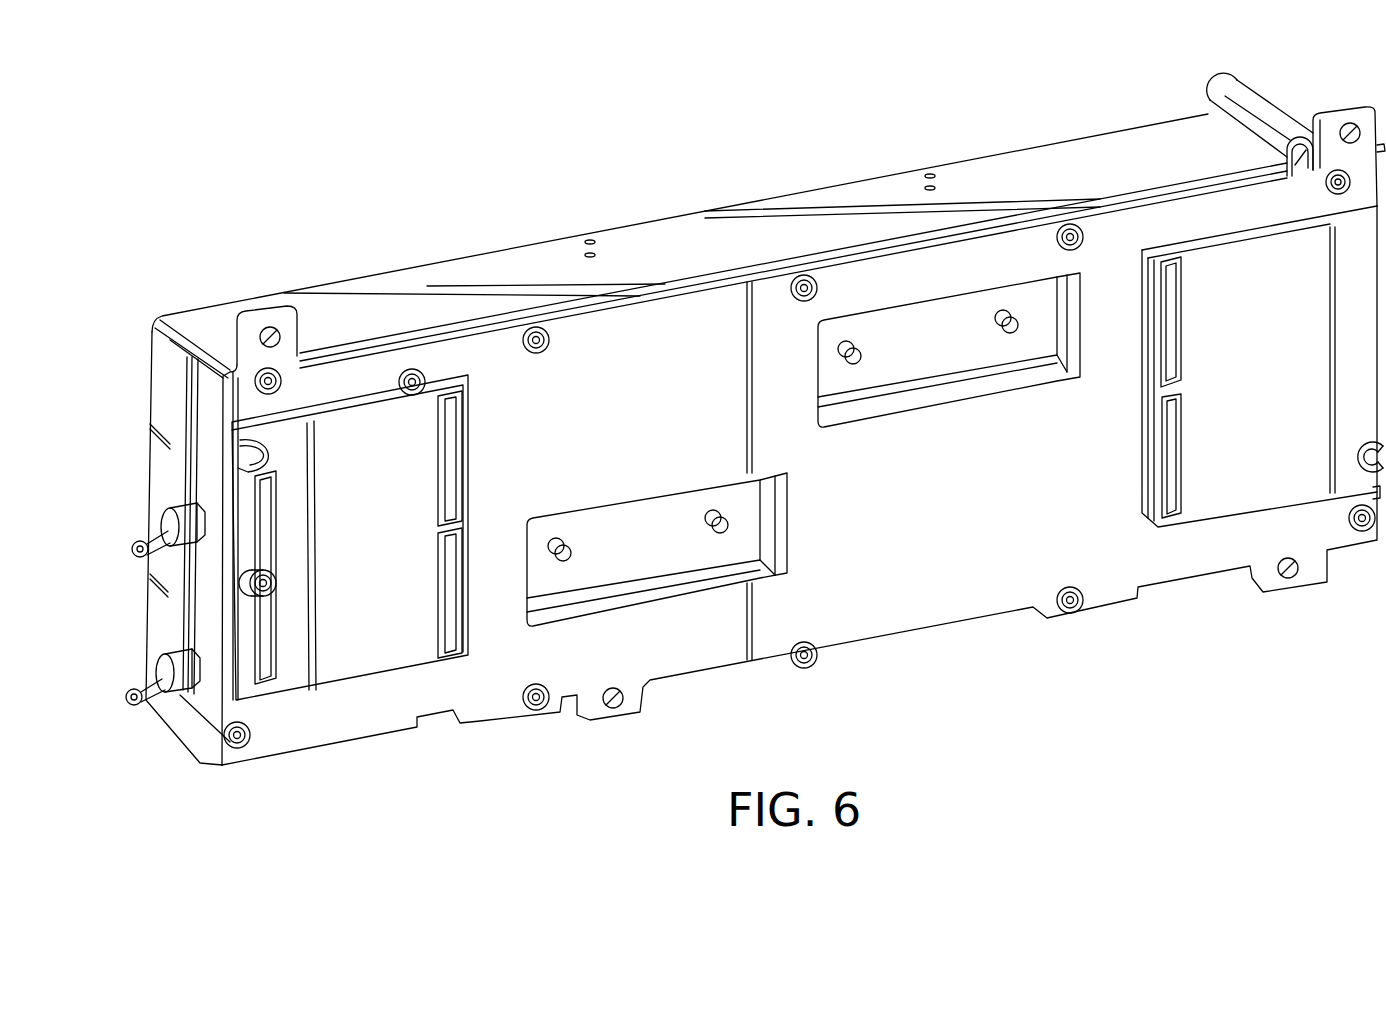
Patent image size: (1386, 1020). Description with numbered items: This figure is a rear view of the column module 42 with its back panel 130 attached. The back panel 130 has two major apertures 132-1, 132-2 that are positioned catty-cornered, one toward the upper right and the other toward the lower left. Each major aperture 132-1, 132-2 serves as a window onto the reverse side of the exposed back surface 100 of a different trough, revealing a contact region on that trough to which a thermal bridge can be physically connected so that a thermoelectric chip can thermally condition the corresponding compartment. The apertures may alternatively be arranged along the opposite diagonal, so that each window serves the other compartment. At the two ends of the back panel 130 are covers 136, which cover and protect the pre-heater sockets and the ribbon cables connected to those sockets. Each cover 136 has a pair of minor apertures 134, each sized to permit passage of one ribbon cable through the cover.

The column module 42 is at (404, 145).
The back panel 130 is at (980, 522).
The major aperture 132-1 is at (976, 324).
The major aperture 132-2 is at (629, 556).
The exposed back surface 100 is at (660, 548).
The minor aperture 134 is at (446, 452).
The cover 136 is at (372, 577).